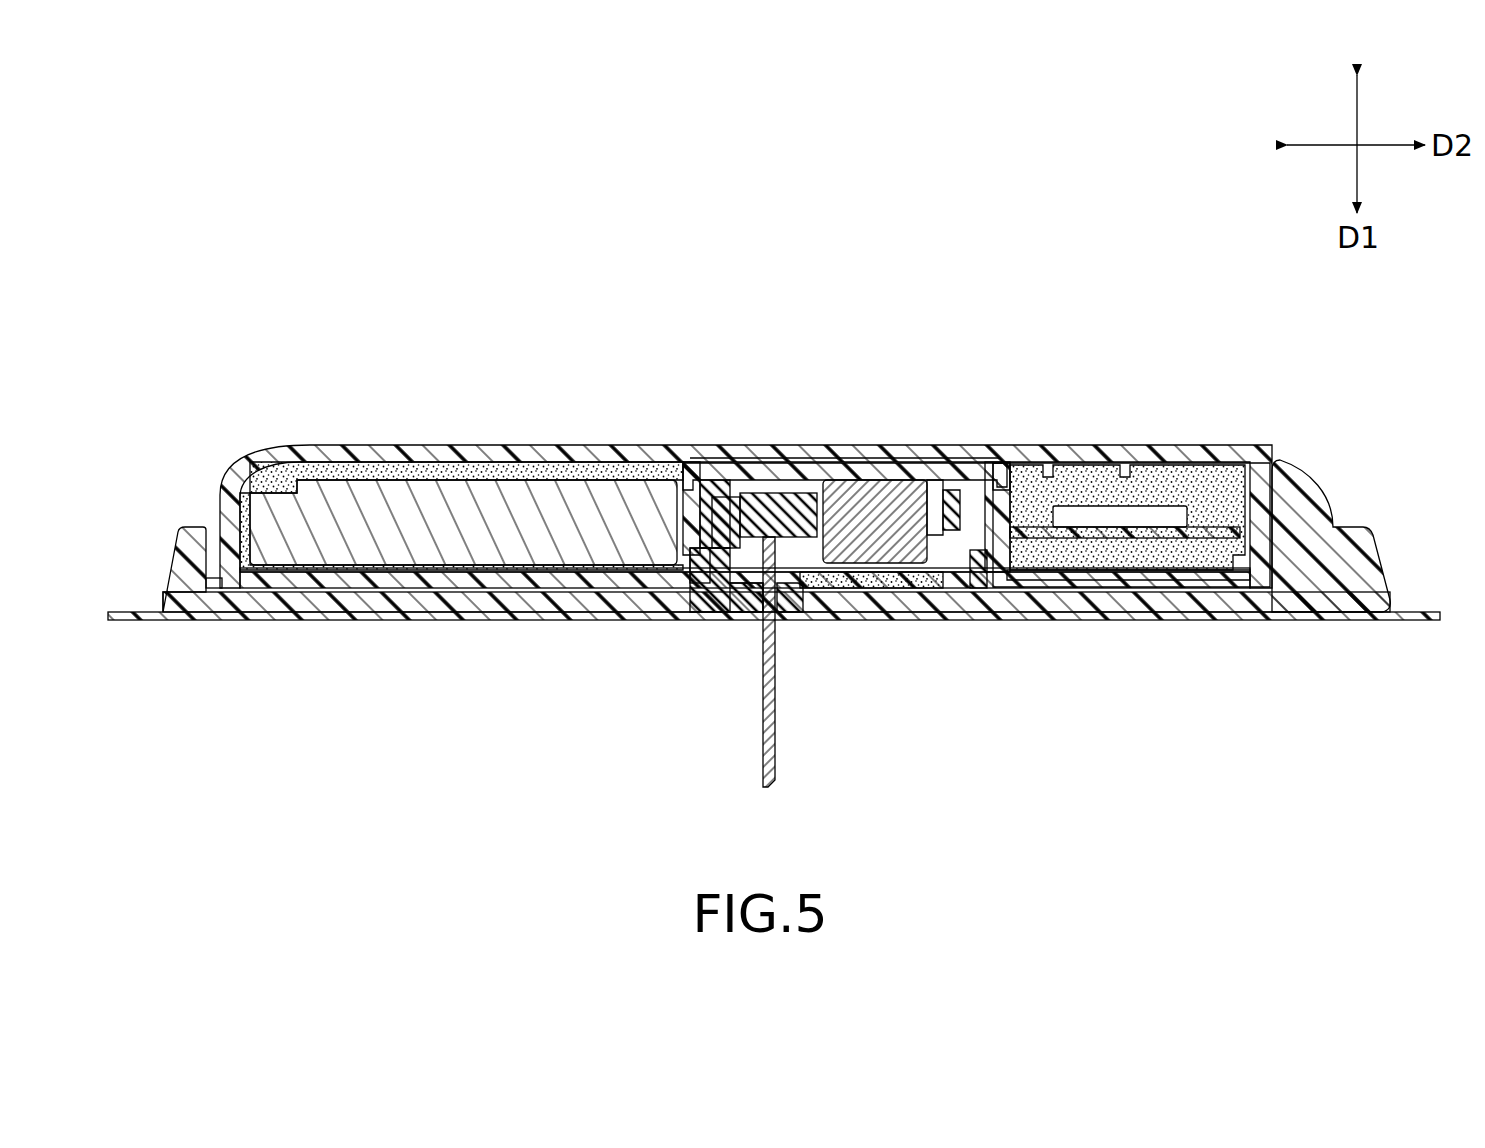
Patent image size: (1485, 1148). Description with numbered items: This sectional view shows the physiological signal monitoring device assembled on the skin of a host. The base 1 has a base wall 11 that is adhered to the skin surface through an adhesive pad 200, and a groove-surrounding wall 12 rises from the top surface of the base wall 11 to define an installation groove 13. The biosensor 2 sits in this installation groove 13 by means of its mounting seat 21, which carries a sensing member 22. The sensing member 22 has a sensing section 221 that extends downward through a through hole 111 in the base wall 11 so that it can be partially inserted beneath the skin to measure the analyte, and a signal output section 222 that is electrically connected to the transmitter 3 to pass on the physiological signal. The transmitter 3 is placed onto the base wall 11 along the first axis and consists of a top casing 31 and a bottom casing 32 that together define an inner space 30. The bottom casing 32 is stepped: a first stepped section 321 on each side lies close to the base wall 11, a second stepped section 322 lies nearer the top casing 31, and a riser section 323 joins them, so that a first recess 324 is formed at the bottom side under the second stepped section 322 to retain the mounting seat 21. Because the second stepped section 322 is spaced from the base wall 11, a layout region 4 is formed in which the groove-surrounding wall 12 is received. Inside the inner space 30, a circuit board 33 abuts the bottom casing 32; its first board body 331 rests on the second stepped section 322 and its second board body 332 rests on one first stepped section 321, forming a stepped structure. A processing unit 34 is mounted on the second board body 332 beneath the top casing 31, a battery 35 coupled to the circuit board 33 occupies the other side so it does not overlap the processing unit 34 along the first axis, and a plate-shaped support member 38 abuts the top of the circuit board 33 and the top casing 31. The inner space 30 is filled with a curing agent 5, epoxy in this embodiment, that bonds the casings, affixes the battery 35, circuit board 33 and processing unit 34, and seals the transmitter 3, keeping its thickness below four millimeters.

The base 1 is at (812, 591).
The base wall 11 is at (1147, 603).
The through hole 111 is at (750, 612).
The groove-surrounding wall 12 is at (690, 583).
The installation groove 13 is at (957, 586).
The biosensor 2 is at (700, 600).
The mounting seat 21 is at (975, 490).
The sensing member 22 is at (813, 488).
The sensing section 221 is at (777, 747).
The signal output section 222 is at (867, 490).
The transmitter 3 is at (745, 572).
The inner space 30 is at (480, 548).
The top casing 31 is at (352, 450).
The bottom casing 32 is at (410, 583).
The first stepped section 321 is at (270, 580).
The second stepped section 322 is at (960, 490).
The riser section 323 is at (998, 518).
The first recess 324 is at (697, 540).
The circuit board 33 is at (705, 472).
The first board body 331 is at (718, 472).
The second board body 332 is at (1186, 592).
The processing unit 34 is at (1166, 500).
The battery 35 is at (478, 552).
The support member 38 is at (753, 465).
The layout region 4 is at (895, 590).
The curing agent 5 is at (1231, 489).
The adhesive pad 200 is at (140, 623).